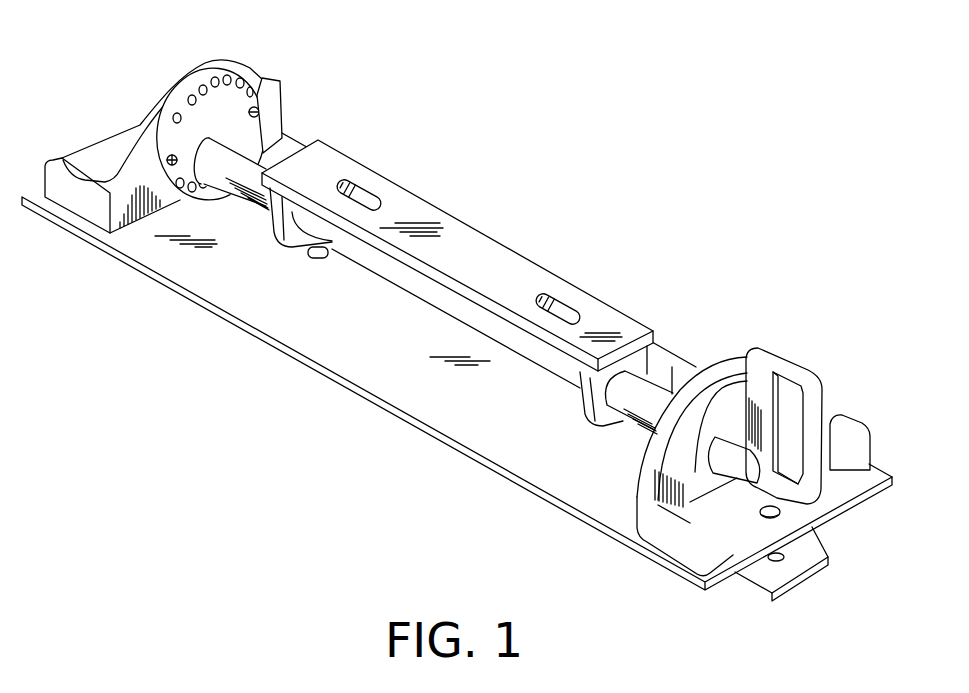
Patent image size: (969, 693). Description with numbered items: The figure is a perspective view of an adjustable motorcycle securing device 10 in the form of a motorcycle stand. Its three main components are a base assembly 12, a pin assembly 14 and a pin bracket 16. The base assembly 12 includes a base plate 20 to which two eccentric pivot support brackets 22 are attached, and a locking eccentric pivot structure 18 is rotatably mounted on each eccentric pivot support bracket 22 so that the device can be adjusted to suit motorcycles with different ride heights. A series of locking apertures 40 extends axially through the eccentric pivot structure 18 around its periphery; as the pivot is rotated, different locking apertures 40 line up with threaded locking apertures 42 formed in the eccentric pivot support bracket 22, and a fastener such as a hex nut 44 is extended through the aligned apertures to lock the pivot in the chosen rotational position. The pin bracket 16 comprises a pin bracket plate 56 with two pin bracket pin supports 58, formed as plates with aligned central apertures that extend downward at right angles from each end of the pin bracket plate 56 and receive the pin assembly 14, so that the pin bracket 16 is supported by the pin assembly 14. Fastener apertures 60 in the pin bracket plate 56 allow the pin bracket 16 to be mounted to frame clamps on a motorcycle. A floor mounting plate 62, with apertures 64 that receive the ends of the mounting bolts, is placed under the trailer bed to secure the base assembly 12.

The motorcycle securing device 10 is at (655, 140).
The base assembly 12 is at (390, 412).
The pin assembly 14 is at (813, 387).
The pin bracket 16 is at (483, 221).
The locking eccentric pivot structure 18 is at (249, 97).
The base plate 20 is at (330, 333).
The eccentric pivot support bracket 22 is at (140, 142).
The locking apertures 40 is at (218, 70).
The threaded locking apertures 42 is at (682, 448).
The hex nut 44 is at (259, 113).
The pin bracket plate 56 is at (541, 280).
The pin bracket pin supports 58 is at (258, 237).
The fastener apertures 60 is at (373, 188).
The floor mounting plate 62 is at (815, 570).
The apertures 64 is at (772, 557).